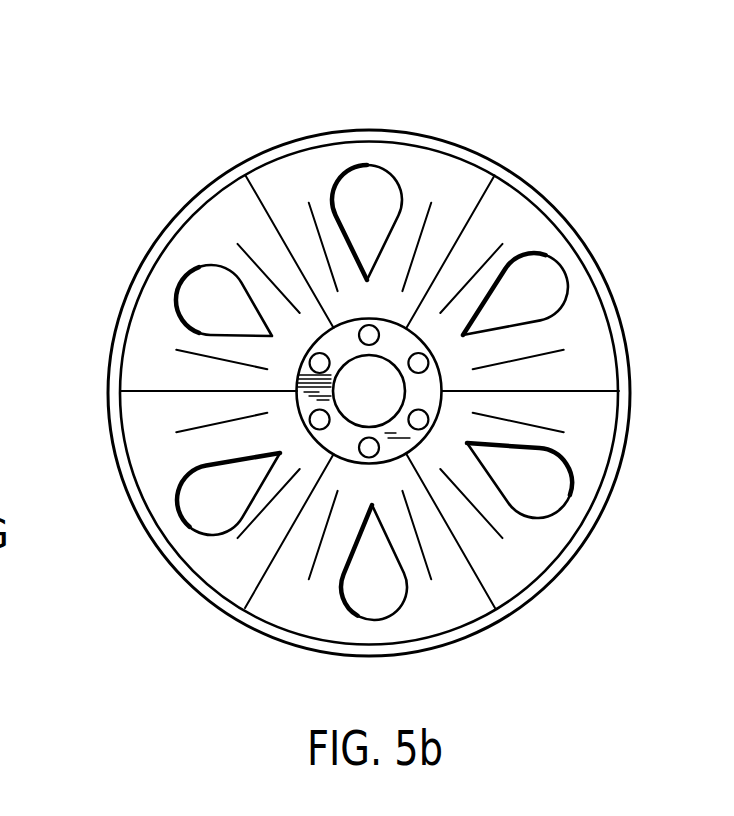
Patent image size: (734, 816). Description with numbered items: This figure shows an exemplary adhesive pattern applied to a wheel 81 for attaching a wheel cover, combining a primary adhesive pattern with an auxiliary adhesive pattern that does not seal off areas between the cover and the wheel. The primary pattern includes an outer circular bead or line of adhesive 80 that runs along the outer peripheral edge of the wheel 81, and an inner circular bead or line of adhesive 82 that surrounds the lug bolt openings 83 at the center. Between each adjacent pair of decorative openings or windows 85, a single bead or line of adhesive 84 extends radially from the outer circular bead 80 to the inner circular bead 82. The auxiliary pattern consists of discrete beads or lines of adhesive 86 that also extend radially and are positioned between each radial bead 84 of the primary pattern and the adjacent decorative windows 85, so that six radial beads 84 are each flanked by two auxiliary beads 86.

The outer circular bead or line of adhesive 80 is at (545, 200).
The wheel 81 is at (219, 132).
The inner circular bead or line of adhesive 82 is at (439, 399).
The lug bolt openings 83 is at (326, 352).
The bead or line of adhesive 84 is at (264, 205).
The decorative openings or windows 85 is at (210, 293).
The discrete beads or lines of adhesive 86 is at (262, 263).